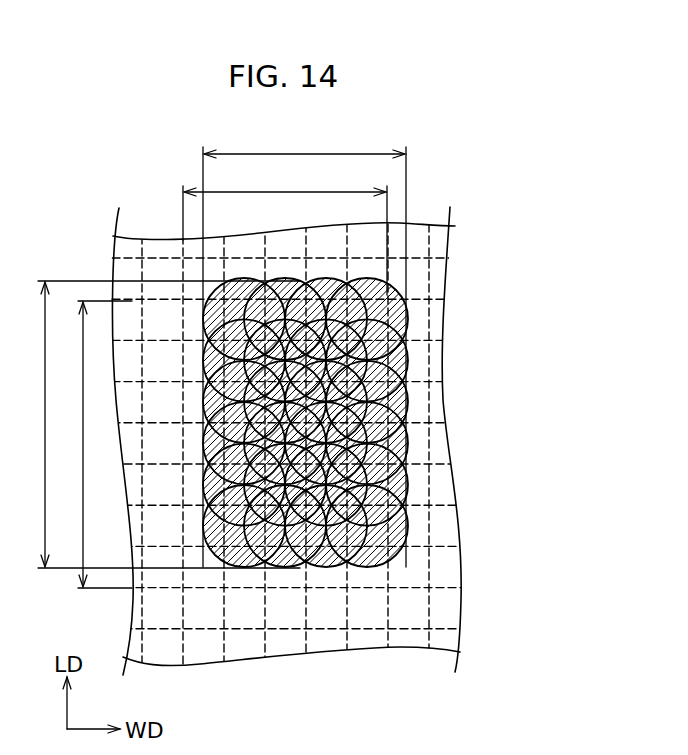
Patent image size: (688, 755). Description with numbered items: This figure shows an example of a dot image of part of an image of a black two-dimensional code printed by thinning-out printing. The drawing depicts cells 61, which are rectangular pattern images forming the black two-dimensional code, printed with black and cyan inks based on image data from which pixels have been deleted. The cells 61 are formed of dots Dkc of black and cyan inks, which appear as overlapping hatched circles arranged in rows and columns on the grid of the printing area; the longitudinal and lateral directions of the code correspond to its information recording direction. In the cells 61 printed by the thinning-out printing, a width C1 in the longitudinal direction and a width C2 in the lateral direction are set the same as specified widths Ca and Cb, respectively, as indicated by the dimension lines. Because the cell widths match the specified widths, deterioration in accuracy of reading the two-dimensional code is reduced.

The cells 61 is at (293, 596).
The dots of black and cyan inks Dkc is at (406, 394).
The specified width Ca is at (154, 424).
The width in the longitudinal direction C1 is at (92, 444).
The specified width Cb is at (304, 346).
The width in the lateral direction C2 is at (285, 230).